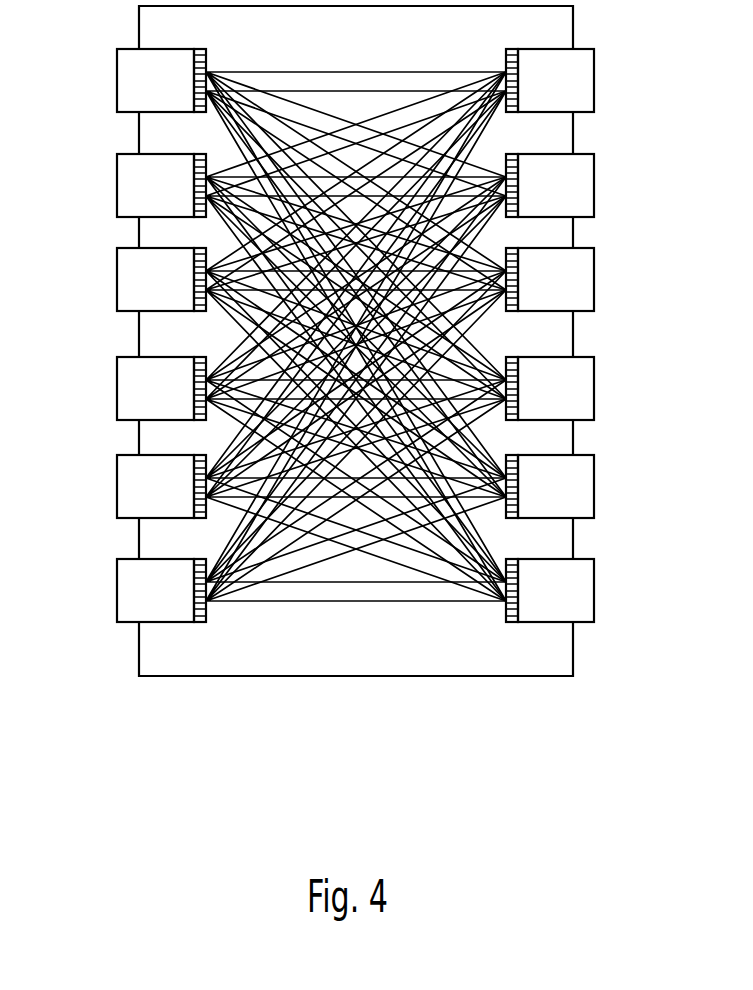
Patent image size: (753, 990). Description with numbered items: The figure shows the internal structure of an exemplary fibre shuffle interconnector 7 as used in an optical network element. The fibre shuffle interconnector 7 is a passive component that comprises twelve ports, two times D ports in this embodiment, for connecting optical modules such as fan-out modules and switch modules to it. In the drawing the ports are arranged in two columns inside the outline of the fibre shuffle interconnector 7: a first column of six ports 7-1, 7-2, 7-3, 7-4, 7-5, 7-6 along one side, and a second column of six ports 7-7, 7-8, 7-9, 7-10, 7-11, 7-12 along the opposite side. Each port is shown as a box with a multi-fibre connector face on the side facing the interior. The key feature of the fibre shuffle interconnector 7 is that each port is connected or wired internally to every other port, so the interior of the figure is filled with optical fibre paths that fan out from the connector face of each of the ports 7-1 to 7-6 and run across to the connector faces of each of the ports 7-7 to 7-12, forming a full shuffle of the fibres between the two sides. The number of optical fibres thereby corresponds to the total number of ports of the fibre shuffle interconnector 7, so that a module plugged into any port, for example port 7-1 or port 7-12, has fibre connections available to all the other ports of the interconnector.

The fibre shuffle interconnector 7 is at (460, 657).
The port 7-1 is at (130, 81).
The port 7-2 is at (130, 186).
The port 7-3 is at (130, 280).
The port 7-4 is at (130, 389).
The port 7-5 is at (130, 487).
The port 7-6 is at (130, 591).
The port 7-7 is at (584, 82).
The port 7-8 is at (584, 187).
The port 7-9 is at (584, 281).
The port 7-10 is at (584, 390).
The port 7-11 is at (584, 488).
The port 7-12 is at (584, 592).